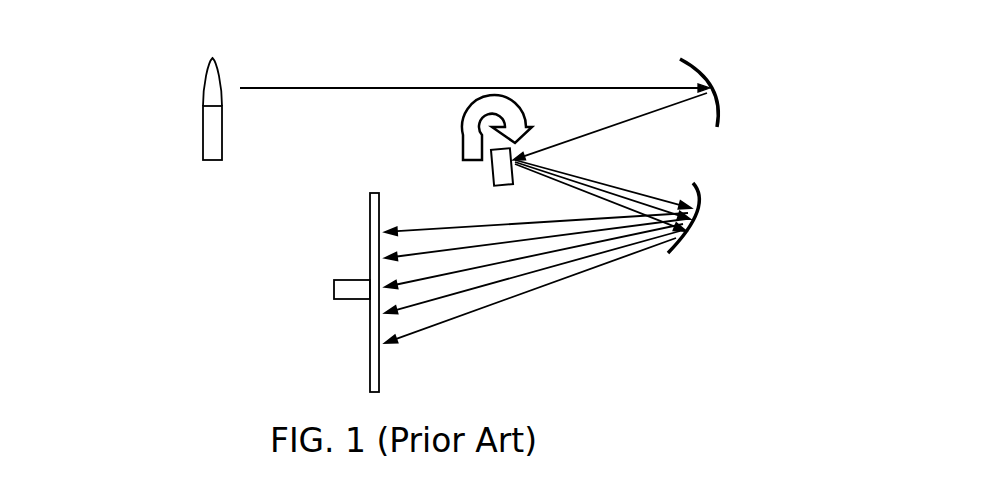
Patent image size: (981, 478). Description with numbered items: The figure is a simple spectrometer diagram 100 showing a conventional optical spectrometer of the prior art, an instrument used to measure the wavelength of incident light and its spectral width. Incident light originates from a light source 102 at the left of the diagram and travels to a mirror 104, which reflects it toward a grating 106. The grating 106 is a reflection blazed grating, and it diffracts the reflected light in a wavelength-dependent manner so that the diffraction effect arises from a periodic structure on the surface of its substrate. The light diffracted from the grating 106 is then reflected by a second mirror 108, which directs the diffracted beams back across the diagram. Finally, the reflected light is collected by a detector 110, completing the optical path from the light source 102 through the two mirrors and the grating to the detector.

The spectrometer diagram 100 is at (75, 67).
The light source 102 is at (190, 110).
The mirror 104 is at (723, 69).
The grating 106 is at (478, 171).
The second mirror 108 is at (704, 245).
The detector 110 is at (358, 328).